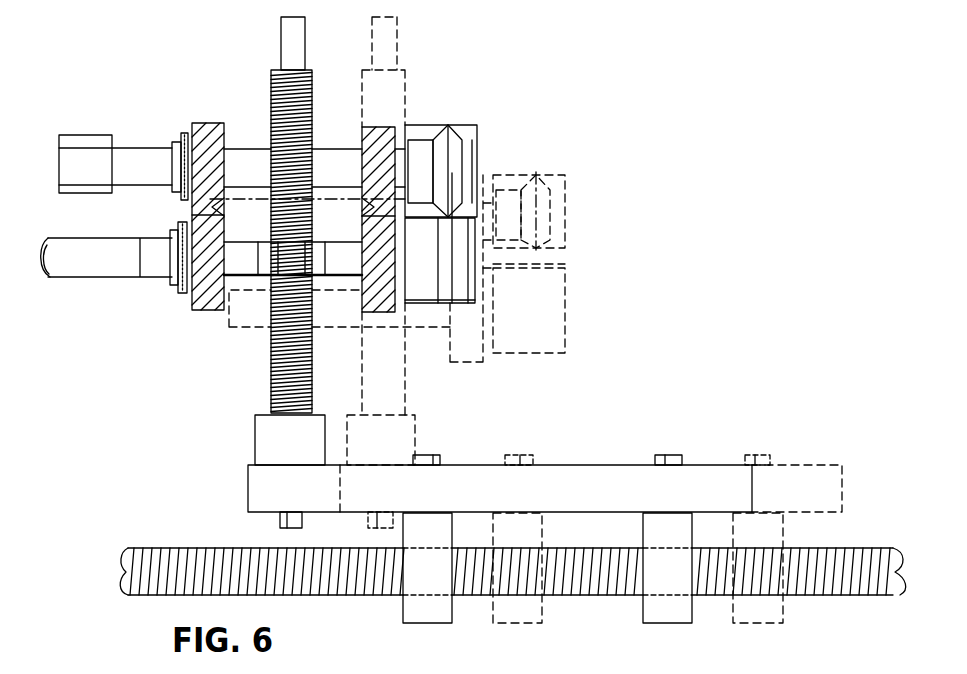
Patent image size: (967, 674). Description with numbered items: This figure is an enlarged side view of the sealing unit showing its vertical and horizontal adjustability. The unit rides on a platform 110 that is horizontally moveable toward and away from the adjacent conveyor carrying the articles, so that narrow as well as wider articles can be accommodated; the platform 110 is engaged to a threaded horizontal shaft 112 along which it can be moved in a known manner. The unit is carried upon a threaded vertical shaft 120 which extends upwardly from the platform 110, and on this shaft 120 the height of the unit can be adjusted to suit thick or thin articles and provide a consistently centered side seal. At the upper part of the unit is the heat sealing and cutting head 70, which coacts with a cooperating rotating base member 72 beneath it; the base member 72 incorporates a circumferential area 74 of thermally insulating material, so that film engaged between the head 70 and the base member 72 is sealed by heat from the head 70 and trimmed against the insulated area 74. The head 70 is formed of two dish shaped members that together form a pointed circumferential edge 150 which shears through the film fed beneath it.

The threaded vertical shaft 120 is at (385, 17).
The pointed circumferential edge 150 is at (448, 123).
The heat sealing and cutting head 70 is at (462, 132).
The rotating base member 72 is at (422, 303).
The circumferential area 74 is at (443, 303).
The platform 110 is at (568, 465).
The threaded horizontal shaft 112 is at (903, 590).